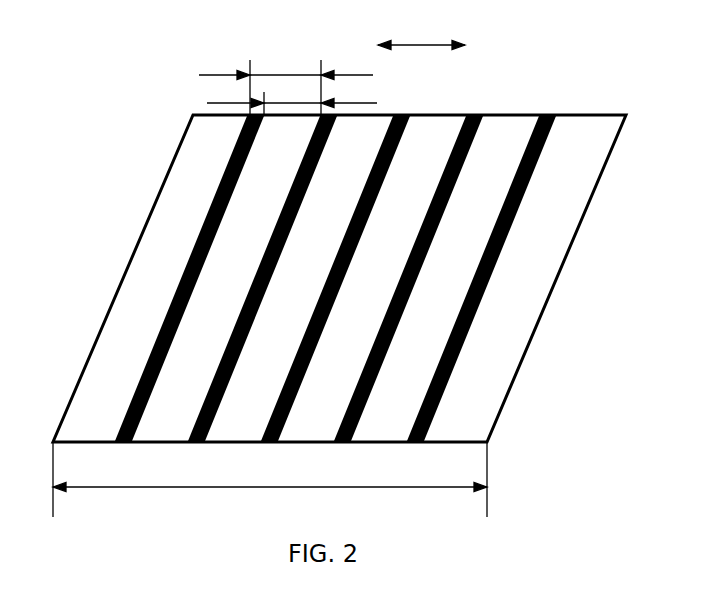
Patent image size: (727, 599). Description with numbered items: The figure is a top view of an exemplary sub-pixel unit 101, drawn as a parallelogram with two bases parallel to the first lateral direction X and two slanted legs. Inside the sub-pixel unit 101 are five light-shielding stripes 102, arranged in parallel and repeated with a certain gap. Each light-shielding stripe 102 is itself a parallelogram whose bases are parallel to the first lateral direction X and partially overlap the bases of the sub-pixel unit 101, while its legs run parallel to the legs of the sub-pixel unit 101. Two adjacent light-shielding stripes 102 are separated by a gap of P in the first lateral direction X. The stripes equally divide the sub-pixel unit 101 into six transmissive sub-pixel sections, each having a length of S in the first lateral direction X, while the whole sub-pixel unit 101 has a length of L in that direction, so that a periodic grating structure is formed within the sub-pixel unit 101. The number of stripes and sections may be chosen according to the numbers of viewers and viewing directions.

The sub-pixel unit 101 is at (155, 197).
The light-shielding stripes 102 is at (232, 159).
The gap between adjacent light-shielding stripes P is at (286, 79).
The length of sub-pixel section S is at (292, 97).
The first lateral direction X is at (421, 31).
The length of sub-pixel unit L is at (270, 479).